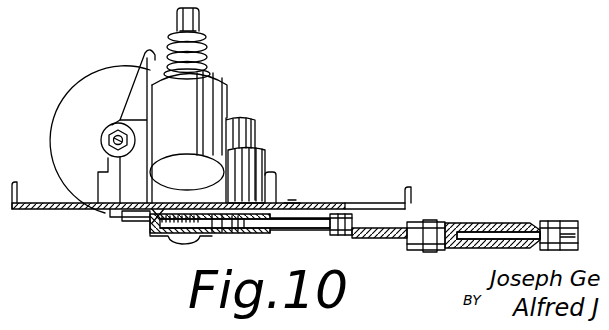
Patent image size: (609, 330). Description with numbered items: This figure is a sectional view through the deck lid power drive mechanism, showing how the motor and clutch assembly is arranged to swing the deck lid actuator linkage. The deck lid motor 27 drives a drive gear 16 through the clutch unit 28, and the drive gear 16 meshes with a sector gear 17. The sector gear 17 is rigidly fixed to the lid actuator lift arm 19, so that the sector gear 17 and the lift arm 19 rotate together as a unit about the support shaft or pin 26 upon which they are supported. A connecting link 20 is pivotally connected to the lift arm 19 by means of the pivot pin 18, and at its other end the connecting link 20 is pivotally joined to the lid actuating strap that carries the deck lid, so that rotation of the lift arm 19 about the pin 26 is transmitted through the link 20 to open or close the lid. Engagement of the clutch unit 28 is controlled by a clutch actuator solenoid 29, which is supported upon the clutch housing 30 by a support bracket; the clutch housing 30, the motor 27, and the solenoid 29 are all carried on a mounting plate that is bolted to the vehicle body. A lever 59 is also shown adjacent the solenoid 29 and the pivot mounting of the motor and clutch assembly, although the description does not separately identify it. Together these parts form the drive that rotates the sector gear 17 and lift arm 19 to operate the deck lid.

The drive gear 16 is at (146, 222).
The sector gear 17 is at (290, 232).
The pivot pin 18 is at (424, 222).
The lid actuator lift arm 19 is at (366, 238).
The connecting link 20 is at (475, 226).
The support shaft 26 is at (291, 203).
The motor 27 is at (100, 80).
The clutch unit 28 is at (250, 160).
The clutch actuator solenoid 29 is at (226, 100).
The clutch housing 30 is at (255, 125).
The lever 59 is at (152, 52).